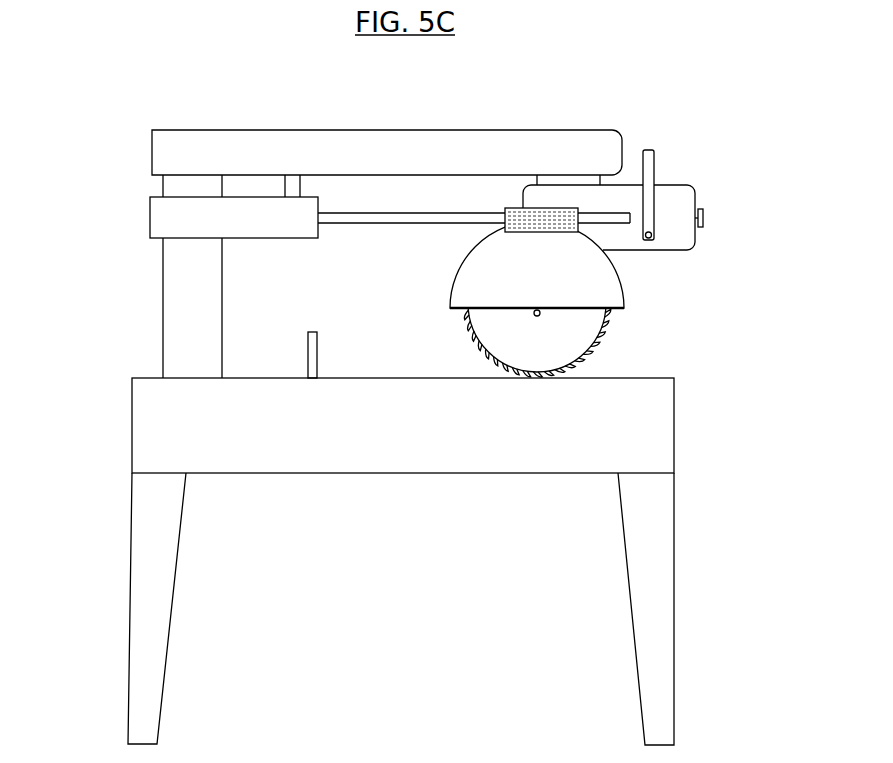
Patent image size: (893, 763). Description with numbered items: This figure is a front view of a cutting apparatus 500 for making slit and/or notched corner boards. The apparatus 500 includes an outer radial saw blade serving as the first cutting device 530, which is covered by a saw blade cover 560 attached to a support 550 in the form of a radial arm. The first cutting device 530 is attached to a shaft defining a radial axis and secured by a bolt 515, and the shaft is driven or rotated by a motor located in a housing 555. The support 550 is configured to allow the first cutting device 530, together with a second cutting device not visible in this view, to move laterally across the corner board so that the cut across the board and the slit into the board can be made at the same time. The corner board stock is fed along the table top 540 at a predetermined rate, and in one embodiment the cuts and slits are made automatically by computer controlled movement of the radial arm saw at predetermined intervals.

The cutting apparatus 500 is at (135, 79).
The bolt 515 is at (532, 315).
The first cutting device 530 is at (598, 342).
The table top 540 is at (677, 425).
The support 550 is at (620, 213).
The housing 555 is at (682, 185).
The saw blade cover 560 is at (622, 280).